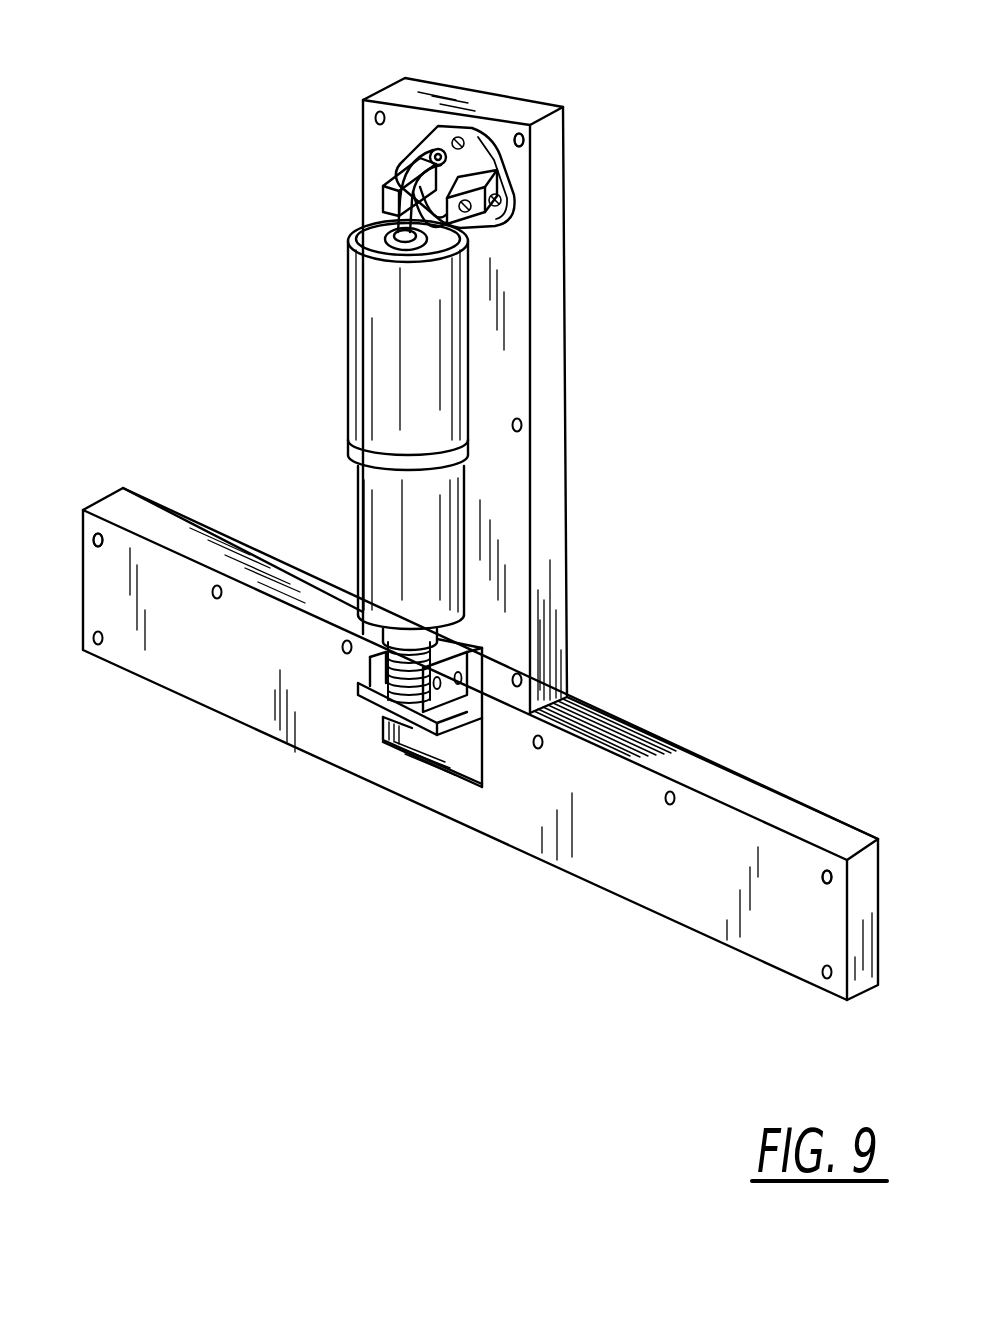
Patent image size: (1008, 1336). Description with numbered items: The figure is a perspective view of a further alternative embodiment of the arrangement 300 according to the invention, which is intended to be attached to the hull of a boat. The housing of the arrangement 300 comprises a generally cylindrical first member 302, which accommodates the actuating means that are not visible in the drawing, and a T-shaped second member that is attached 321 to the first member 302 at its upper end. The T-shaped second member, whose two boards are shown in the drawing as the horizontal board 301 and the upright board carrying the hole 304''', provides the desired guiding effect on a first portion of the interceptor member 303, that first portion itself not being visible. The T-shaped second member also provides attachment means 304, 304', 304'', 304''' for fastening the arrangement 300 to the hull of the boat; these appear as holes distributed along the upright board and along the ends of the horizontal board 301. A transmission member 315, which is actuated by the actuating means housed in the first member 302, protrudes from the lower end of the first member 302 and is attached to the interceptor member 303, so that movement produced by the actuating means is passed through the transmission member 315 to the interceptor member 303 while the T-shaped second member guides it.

The arrangement 300 is at (183, 173).
The horizontal board 301 is at (620, 868).
The first member 302 is at (430, 358).
The interceptor member 303 is at (457, 737).
The attachment means 304 is at (465, 395).
The attachment means 304' is at (125, 473).
The attachment means 304'' is at (878, 810).
The attachment means 304''' is at (607, 122).
The transmission member 315 is at (387, 707).
The attachment 321 is at (470, 155).